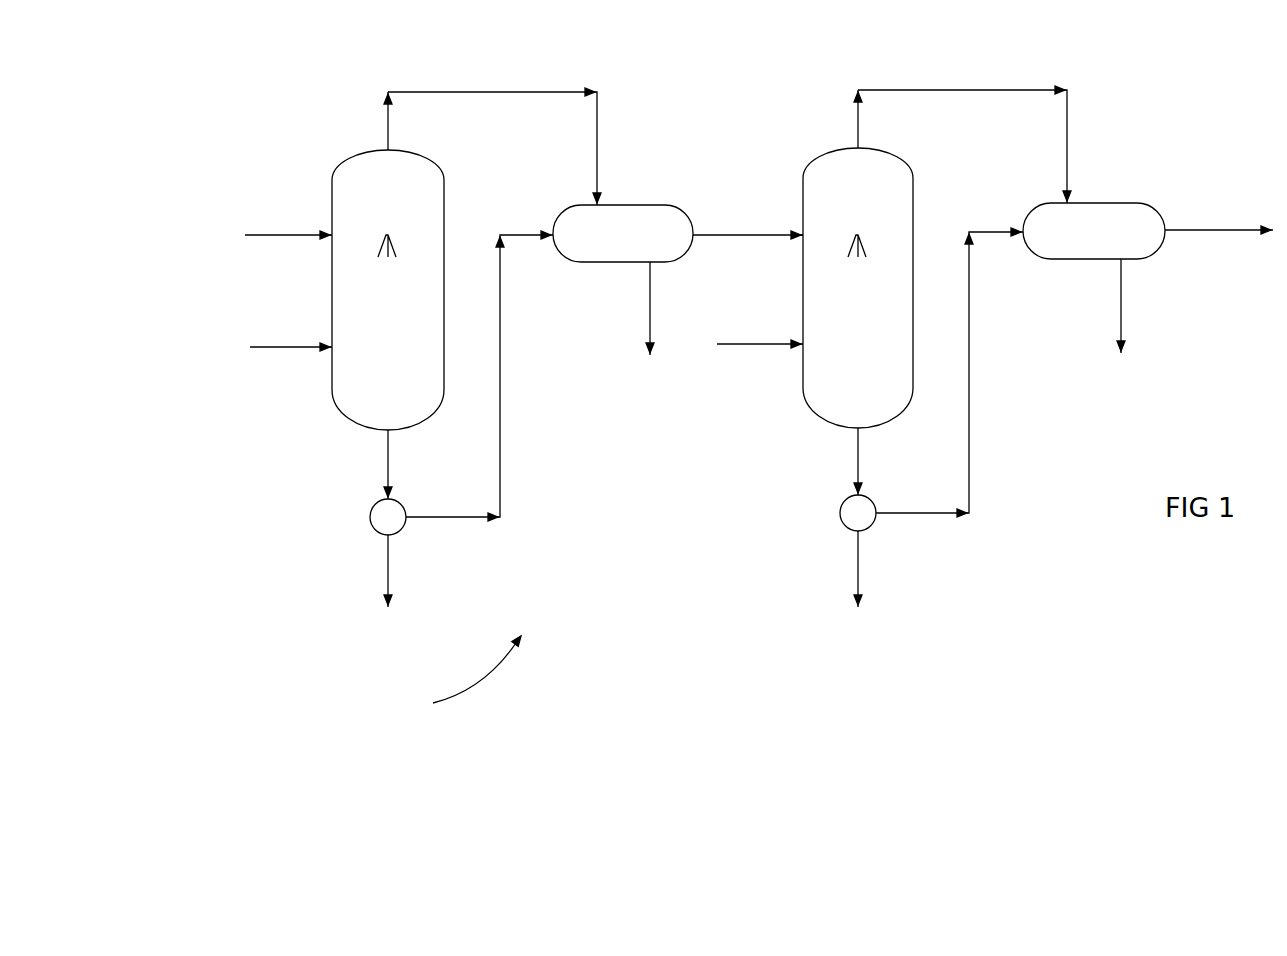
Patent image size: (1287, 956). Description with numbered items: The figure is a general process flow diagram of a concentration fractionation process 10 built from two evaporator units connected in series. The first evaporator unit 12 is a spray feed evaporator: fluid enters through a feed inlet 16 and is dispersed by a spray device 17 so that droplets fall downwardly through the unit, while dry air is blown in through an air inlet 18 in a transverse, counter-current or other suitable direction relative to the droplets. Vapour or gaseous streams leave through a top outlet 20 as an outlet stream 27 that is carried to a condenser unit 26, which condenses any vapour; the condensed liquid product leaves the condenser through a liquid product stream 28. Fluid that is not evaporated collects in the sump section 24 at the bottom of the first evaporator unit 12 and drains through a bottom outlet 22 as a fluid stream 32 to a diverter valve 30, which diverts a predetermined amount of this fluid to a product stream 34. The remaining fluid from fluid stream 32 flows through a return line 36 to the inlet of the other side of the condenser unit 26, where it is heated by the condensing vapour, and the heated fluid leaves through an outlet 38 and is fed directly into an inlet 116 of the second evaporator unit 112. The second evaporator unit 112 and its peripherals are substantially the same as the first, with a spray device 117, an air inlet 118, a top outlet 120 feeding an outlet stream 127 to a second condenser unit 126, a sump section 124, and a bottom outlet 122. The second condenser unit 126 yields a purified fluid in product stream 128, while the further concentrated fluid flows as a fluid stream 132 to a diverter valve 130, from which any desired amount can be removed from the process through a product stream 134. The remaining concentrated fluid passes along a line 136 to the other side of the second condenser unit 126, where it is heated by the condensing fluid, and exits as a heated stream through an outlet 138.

The fractionation process 10 is at (457, 678).
The first evaporator unit 12 is at (377, 375).
The feed inlet 16 is at (283, 234).
The spray device 17 is at (388, 235).
The air inlet 18 is at (288, 348).
The top outlet 20 is at (386, 148).
The bottom outlet 22 is at (388, 435).
The sump section 24 is at (402, 410).
The condenser unit 26 is at (622, 223).
The outlet stream 27 is at (507, 91).
The liquid product stream 28 is at (647, 308).
The diverter valve 30 is at (385, 520).
The fluid stream 32 is at (392, 452).
The product stream 34 is at (392, 560).
The recycle line 36 is at (467, 517).
The outlet 38 is at (758, 236).
The second evaporator unit 112 is at (855, 369).
The inlet 116 is at (802, 232).
The spray device 117 is at (858, 235).
The air inlet 118 is at (758, 344).
The top outlet 120 is at (856, 146).
The bottom outlet 122 is at (858, 433).
The sump section 124 is at (843, 412).
The second condenser unit 126 is at (1095, 222).
The outlet stream 127 is at (912, 89).
The product stream 128 is at (1123, 290).
The diverter valve 130 is at (855, 518).
The fluid stream 132 is at (862, 448).
The product stream 134 is at (862, 558).
The second recycle line 136 is at (940, 515).
The outlet 138 is at (1192, 229).